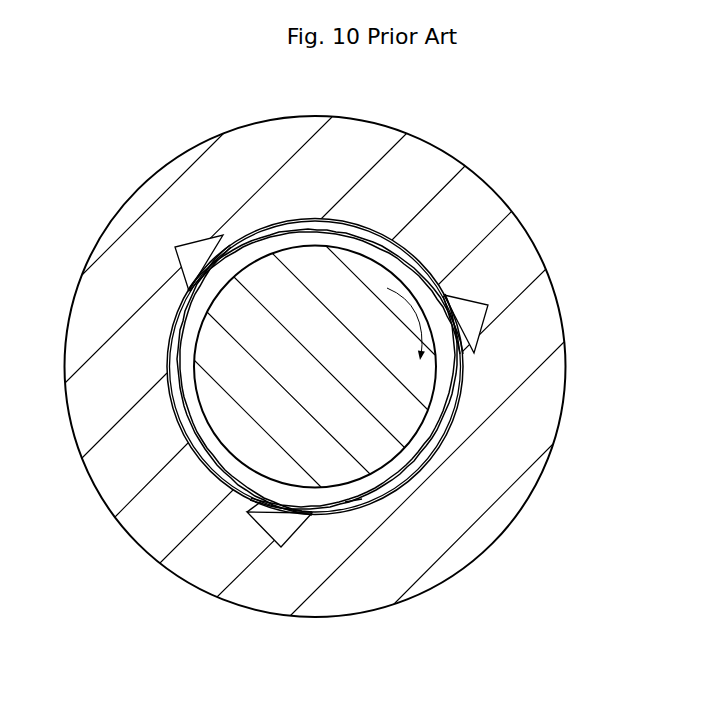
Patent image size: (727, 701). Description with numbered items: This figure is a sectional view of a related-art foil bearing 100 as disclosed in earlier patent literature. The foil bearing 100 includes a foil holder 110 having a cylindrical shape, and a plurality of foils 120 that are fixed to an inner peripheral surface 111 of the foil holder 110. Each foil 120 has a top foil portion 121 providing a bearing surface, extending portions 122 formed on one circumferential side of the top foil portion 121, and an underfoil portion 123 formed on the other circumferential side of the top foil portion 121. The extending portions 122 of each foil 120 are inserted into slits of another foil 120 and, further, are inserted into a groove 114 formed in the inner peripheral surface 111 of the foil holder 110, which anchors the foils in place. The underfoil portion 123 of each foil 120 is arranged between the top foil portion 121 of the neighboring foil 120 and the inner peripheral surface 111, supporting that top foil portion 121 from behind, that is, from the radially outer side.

The foil bearing 100 is at (334, 374).
The foil holder 110 is at (566, 320).
The inner peripheral surface 111 is at (197, 411).
The groove 114 is at (172, 258).
The foil 120 is at (272, 232).
The top foil portion 121 is at (436, 443).
The extending portion 122 is at (247, 513).
The underfoil portion 123 is at (352, 502).